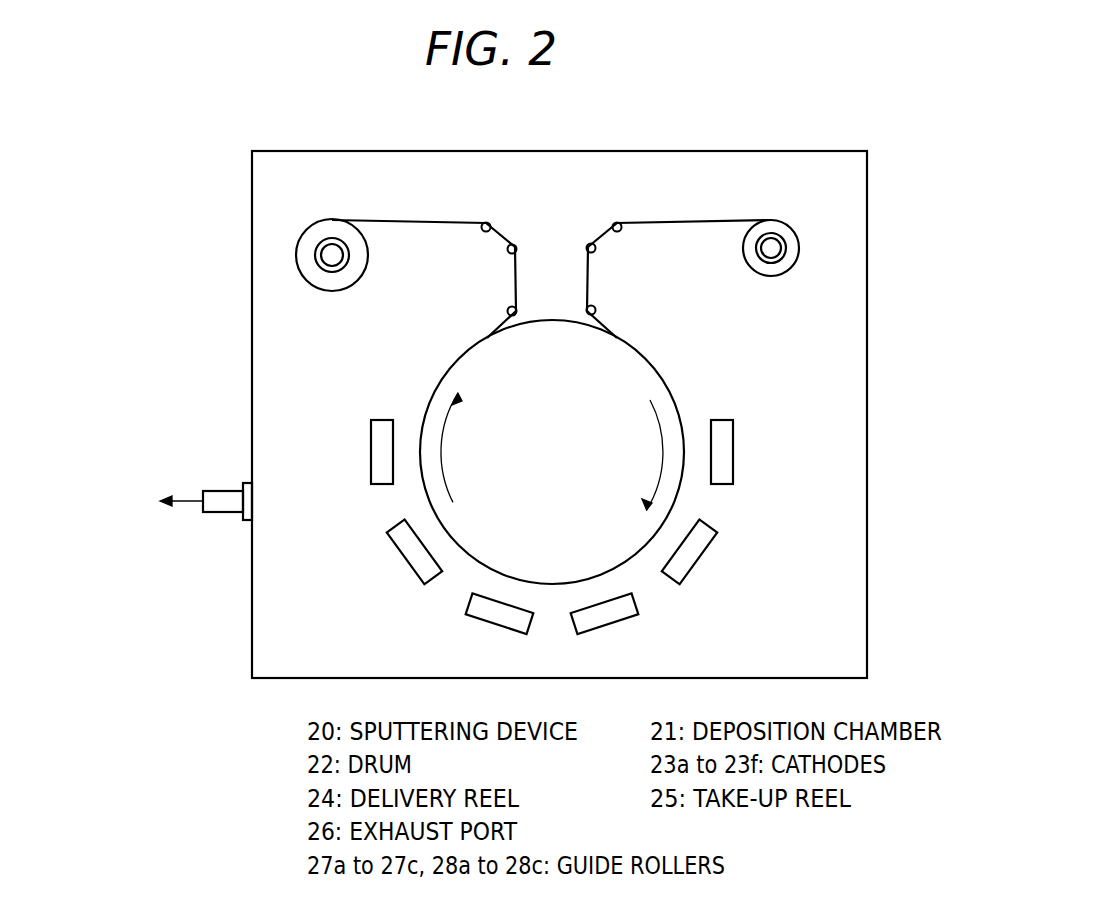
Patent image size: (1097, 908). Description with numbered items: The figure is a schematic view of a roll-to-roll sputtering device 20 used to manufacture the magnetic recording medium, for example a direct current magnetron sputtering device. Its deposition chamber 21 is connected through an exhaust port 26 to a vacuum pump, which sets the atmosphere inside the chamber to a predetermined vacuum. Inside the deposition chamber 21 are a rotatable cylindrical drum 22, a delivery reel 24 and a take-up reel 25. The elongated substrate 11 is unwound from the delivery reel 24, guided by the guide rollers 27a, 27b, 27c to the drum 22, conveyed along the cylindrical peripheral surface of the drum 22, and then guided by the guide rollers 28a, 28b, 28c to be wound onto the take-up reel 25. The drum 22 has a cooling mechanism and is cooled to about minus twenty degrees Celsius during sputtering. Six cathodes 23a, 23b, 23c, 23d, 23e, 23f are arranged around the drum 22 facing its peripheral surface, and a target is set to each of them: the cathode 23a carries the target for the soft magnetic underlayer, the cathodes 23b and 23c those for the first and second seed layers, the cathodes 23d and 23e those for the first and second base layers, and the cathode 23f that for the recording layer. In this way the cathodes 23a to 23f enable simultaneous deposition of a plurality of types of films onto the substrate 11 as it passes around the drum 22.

The substrate 11 is at (692, 220).
The sputtering device 20 is at (526, 365).
The deposition chamber 21 is at (251, 278).
The drum 22 is at (447, 378).
The cathode 23a is at (733, 455).
The cathode 23b is at (702, 556).
The cathode 23c is at (604, 628).
The cathode 23d is at (499, 628).
The cathode 23e is at (400, 556).
The cathode 23f is at (370, 458).
The delivery reel 24 is at (790, 230).
The take-up reel 25 is at (317, 238).
The exhaust port 26 is at (215, 513).
The guide roller 27a is at (623, 229).
The guide roller 27b is at (597, 253).
The guide roller 27c is at (597, 311).
The guide roller 28a is at (507, 311).
The guide roller 28b is at (507, 253).
The guide roller 28c is at (480, 228).